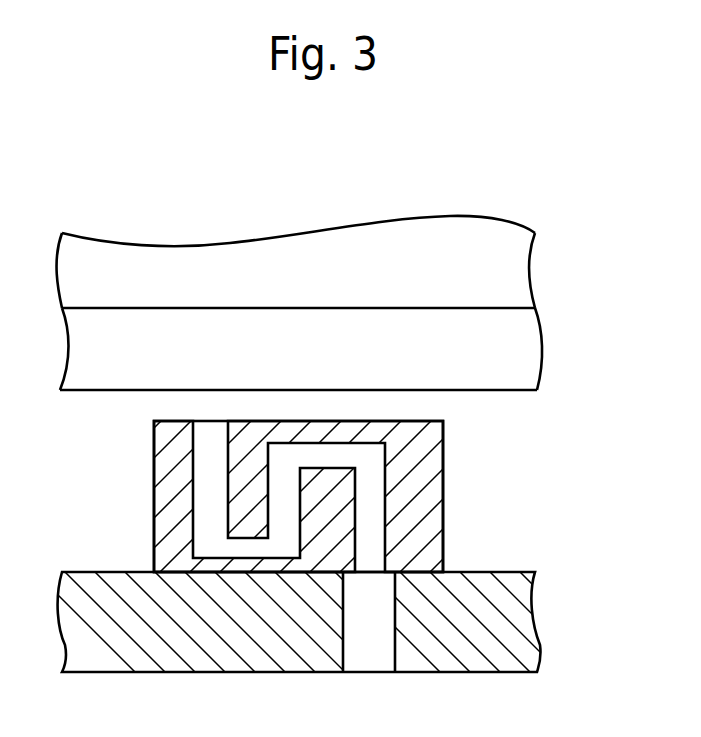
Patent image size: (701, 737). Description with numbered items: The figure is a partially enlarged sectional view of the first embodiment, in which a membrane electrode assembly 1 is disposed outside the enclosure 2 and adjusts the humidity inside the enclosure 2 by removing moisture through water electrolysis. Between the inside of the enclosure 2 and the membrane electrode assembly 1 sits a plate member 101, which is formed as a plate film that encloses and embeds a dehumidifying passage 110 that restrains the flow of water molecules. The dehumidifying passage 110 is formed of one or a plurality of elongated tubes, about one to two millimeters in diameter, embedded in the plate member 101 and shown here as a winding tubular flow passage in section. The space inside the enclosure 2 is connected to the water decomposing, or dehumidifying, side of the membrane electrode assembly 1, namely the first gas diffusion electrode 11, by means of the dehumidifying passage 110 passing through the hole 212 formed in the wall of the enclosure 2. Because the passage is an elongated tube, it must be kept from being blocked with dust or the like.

The membrane electrode assembly 1 is at (508, 274).
The first gas diffusion electrode 11 is at (522, 350).
The plate member 101 is at (295, 496).
The dehumidifying passage 110 is at (373, 500).
The enclosure 2 is at (327, 645).
The hole 212 is at (400, 620).